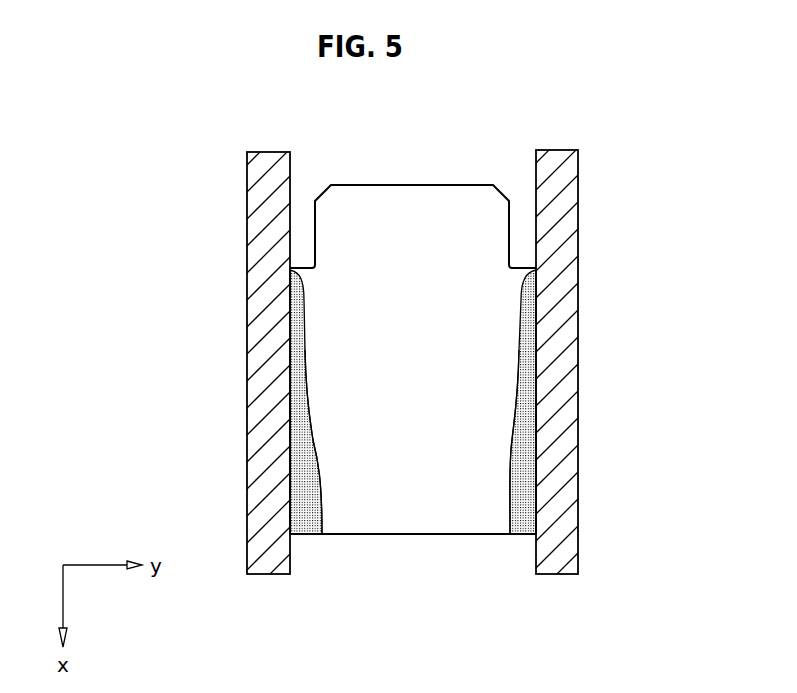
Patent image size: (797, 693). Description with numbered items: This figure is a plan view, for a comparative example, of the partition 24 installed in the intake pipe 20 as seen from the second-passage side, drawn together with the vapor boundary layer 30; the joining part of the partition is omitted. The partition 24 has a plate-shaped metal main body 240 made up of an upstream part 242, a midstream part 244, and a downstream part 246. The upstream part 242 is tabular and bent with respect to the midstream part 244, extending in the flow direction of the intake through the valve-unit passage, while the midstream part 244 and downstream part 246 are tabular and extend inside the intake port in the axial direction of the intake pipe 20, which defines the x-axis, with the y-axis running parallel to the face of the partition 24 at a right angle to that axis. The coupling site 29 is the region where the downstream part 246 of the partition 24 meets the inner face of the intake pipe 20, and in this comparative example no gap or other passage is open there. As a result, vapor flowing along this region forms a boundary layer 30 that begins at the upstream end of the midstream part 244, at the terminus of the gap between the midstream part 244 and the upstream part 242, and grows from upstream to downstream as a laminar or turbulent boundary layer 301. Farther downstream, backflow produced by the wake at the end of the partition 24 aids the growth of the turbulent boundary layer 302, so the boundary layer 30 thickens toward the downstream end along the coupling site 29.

The intake pipe 20 is at (290, 207).
The partition 24 is at (414, 186).
The upstream part 242 is at (420, 203).
The midstream part 244 is at (430, 307).
The downstream part 246 is at (420, 435).
The main body 240 is at (665, 223).
The coupling site 29 is at (291, 484).
The boundary layer 30 is at (387, 626).
The laminar or turbulent boundary layer 301 is at (308, 420).
The turbulent boundary layer 302 is at (318, 505).